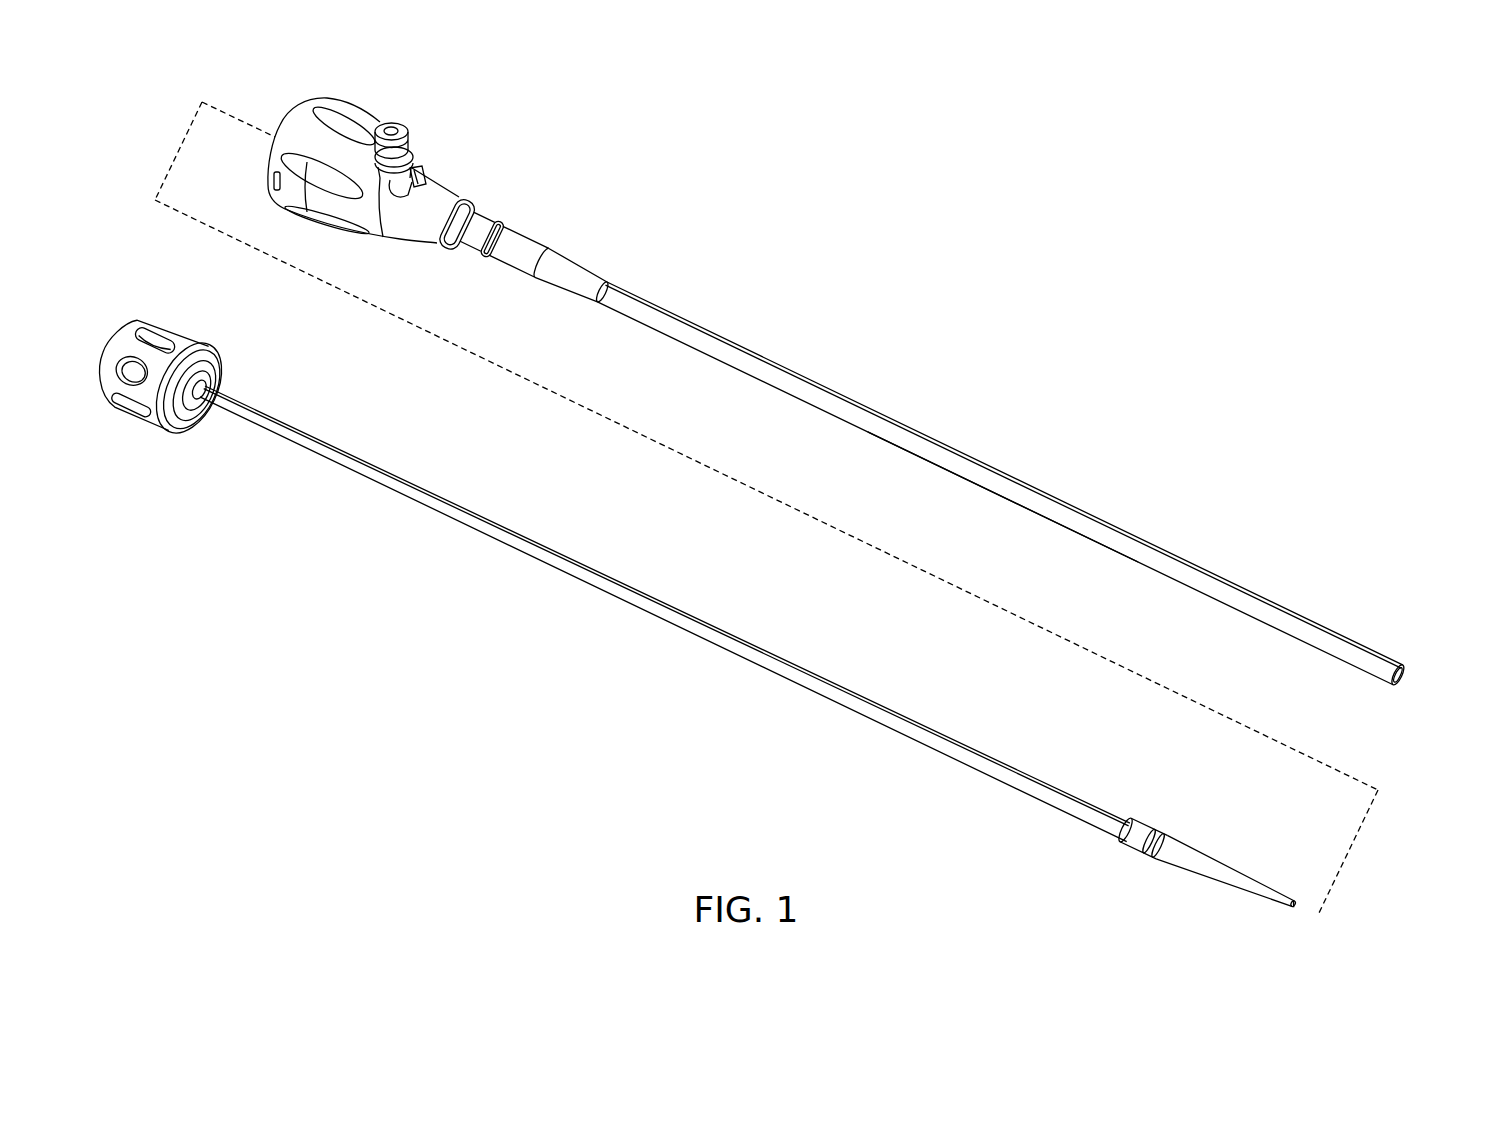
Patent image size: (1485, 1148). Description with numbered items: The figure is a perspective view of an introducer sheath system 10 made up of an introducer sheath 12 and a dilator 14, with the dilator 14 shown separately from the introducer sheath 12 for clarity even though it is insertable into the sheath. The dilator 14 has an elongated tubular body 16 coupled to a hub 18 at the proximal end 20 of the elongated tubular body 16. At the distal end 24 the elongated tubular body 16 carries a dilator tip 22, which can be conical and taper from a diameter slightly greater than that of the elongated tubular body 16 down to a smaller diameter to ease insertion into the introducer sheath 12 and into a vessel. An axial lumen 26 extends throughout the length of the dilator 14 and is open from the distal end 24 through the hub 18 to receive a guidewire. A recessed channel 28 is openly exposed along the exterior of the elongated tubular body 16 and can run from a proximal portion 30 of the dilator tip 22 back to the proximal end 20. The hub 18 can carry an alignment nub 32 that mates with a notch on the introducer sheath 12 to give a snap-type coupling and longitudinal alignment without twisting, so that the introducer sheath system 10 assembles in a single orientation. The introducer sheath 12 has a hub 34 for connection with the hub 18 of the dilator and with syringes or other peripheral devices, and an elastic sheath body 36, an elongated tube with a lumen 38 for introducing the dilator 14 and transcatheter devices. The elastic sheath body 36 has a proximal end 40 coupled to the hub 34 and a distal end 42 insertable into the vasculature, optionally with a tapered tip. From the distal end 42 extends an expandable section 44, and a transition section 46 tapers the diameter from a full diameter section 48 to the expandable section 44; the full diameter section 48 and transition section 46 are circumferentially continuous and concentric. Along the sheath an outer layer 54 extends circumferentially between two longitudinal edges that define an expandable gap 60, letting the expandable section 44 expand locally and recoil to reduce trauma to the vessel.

The introducer sheath system 10 is at (878, 228).
The introducer sheath 12 is at (842, 358).
The dilator 14 is at (467, 596).
The elongated tubular body 16 is at (665, 614).
The hub 18 is at (130, 430).
The proximal end 20 is at (202, 364).
The dilator tip 22 is at (1226, 877).
The distal end 24 is at (1293, 903).
The axial lumen 26 is at (1293, 904).
The recessed channel 28 is at (666, 607).
The proximal portion 30 is at (1141, 838).
The alignment nub 32 is at (189, 388).
The hub 34 is at (355, 117).
The elastic sheath body 36 is at (1003, 497).
The lumen 38 is at (1398, 674).
The proximal end 40 is at (492, 239).
The distal end 42 is at (1397, 675).
The expandable section 44 is at (1001, 484).
The transition section 46 is at (571, 277).
The full diameter section 48 is at (519, 251).
The outer layer 54 is at (999, 483).
The expandable gap 60 is at (1003, 476).